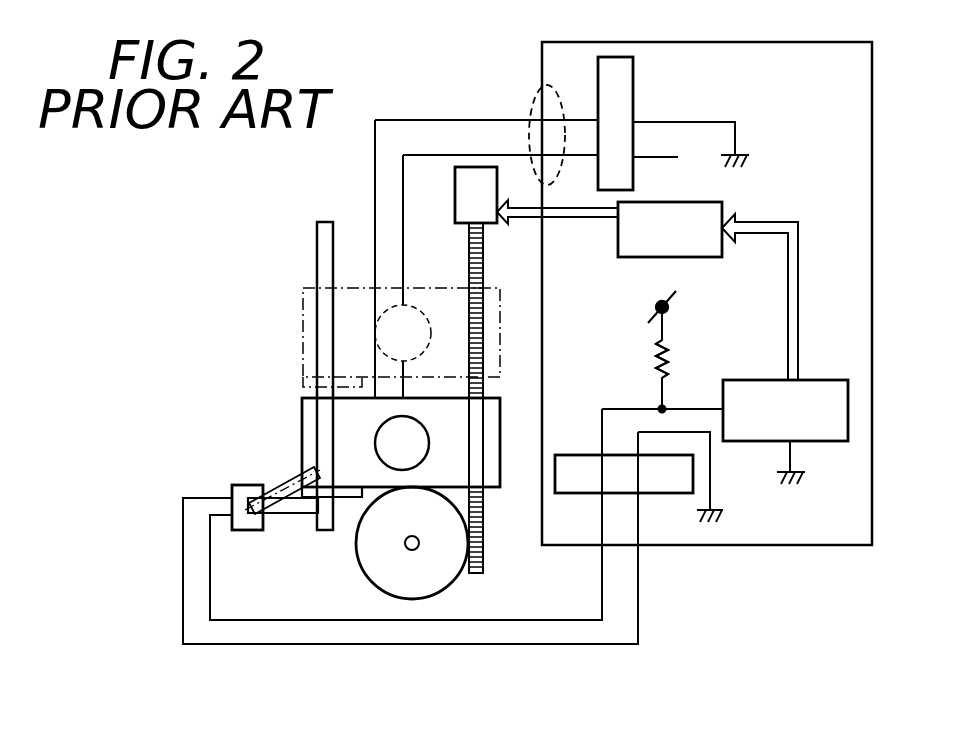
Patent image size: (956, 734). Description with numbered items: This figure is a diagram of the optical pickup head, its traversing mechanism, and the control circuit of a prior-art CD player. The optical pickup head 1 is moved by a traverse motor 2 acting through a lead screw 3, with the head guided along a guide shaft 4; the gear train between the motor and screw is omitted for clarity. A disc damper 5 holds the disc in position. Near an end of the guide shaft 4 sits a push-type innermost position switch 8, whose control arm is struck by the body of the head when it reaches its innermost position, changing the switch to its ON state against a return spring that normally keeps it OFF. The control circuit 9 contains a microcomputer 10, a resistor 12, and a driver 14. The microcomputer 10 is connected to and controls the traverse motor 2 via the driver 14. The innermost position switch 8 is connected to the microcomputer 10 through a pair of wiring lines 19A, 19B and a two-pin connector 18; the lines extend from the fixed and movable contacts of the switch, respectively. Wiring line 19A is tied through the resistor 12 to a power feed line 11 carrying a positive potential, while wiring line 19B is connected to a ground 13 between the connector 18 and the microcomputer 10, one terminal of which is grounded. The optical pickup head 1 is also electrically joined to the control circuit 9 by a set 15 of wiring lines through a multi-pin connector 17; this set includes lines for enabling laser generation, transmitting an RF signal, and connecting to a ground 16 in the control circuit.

The optical pickup head 1 is at (302, 440).
The traverse motor 2 is at (455, 207).
The lead screw 3 is at (483, 262).
The guide shaft 4 is at (317, 250).
The disc damper 5 is at (445, 590).
The innermost position switch 8 is at (253, 530).
The control circuit 9 is at (542, 65).
The microcomputer 10 is at (835, 380).
The power feed line 11 is at (656, 305).
The resistor 12 is at (652, 356).
The ground 13 is at (718, 508).
The driver 14 is at (688, 257).
The set of wiring lines 15 is at (530, 110).
The ground 16 is at (745, 153).
The multi-pin connector 17 is at (633, 86).
The 2-pin connector 18 is at (585, 455).
The wiring line 19A is at (440, 644).
The wiring line 19B is at (372, 620).